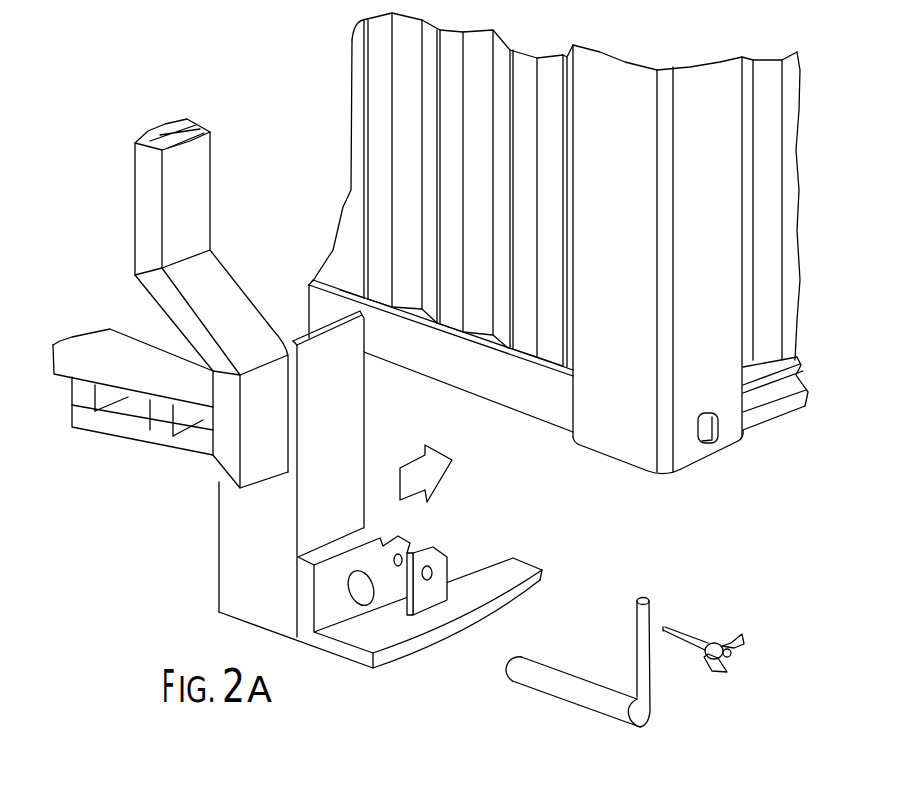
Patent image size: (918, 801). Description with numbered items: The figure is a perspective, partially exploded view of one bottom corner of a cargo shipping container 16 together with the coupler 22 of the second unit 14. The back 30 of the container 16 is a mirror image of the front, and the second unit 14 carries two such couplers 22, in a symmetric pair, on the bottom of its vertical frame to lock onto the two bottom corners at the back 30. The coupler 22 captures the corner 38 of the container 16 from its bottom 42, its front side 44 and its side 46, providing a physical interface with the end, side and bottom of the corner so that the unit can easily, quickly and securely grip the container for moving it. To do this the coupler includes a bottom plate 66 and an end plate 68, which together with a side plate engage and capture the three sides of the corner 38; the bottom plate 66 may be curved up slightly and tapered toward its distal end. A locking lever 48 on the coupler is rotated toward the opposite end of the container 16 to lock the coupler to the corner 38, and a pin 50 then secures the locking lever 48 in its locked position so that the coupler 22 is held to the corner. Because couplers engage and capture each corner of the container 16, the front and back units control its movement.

The second unit 14 is at (137, 352).
The cargo shipping container 16 is at (560, 259).
The coupler 22 is at (279, 474).
The back 30 is at (448, 369).
The corner 38 is at (688, 458).
The bottom 42 is at (618, 470).
The front side 44 is at (606, 416).
The side 46 is at (727, 380).
The locking lever 48 is at (648, 690).
The pin 50 is at (687, 630).
The bottom plate 66 is at (387, 634).
The end plate 68 is at (255, 532).